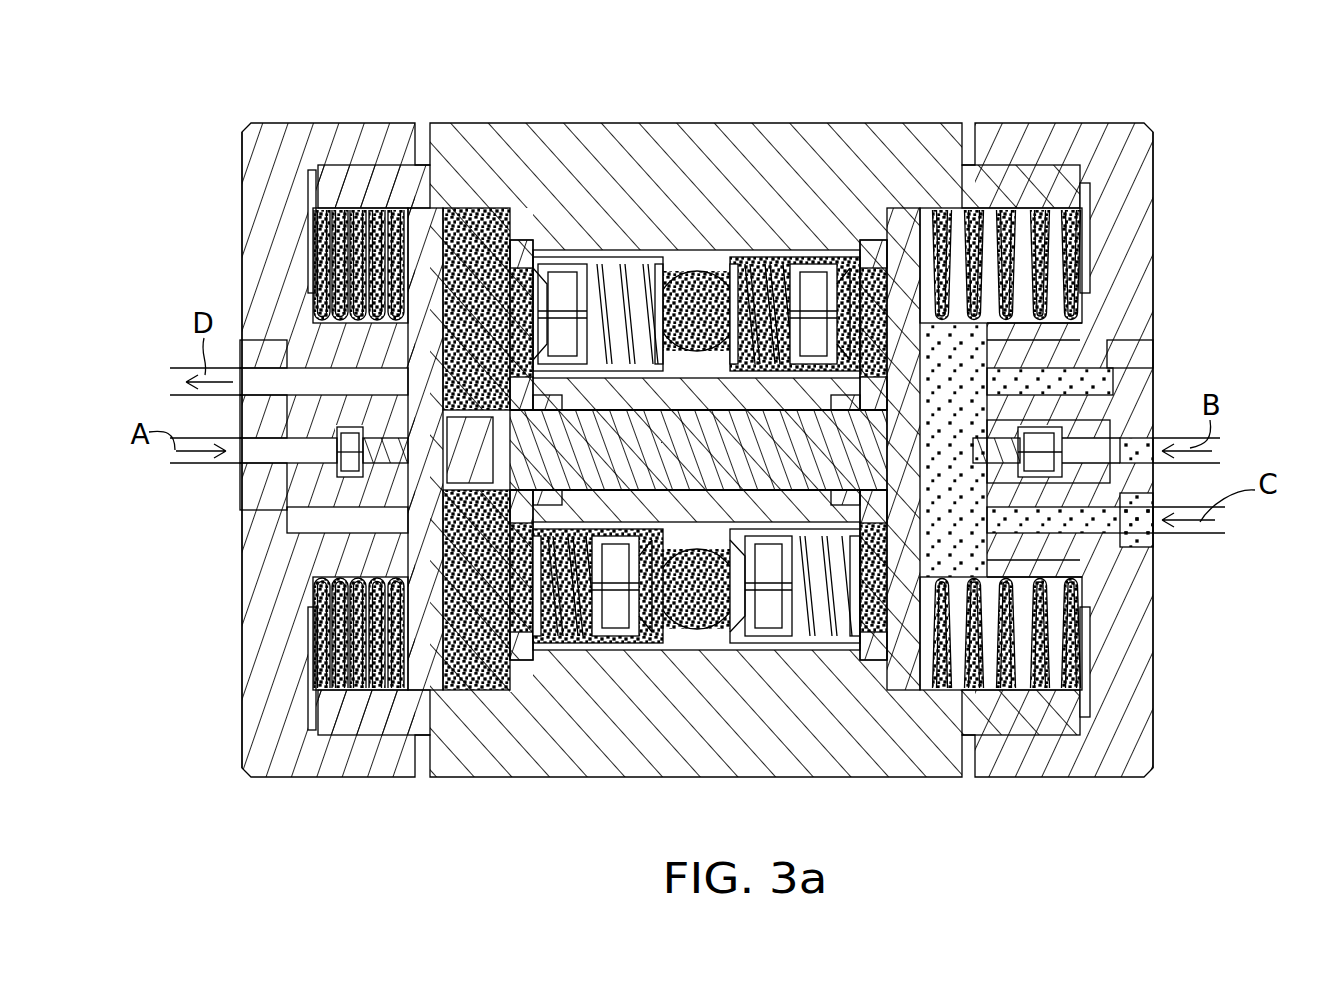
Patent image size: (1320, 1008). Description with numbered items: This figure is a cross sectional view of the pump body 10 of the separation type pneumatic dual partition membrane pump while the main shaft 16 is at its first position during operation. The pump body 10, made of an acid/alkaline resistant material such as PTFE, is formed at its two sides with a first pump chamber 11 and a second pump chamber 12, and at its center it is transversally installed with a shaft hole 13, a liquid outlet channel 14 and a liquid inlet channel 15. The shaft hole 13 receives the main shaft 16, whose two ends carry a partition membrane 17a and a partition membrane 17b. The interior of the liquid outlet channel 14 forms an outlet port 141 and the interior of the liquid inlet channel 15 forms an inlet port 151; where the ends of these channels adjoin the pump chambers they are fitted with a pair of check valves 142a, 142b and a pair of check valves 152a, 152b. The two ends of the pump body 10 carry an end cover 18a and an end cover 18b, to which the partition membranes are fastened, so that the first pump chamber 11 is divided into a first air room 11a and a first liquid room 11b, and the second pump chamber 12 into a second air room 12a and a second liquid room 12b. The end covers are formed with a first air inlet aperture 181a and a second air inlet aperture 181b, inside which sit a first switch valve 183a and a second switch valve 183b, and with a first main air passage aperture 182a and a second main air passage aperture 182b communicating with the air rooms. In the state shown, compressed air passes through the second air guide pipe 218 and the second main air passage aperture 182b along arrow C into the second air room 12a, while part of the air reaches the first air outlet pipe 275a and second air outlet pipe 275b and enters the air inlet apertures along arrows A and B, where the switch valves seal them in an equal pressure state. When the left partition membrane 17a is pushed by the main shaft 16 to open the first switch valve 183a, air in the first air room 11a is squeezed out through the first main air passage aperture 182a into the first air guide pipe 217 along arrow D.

The pump body 10 is at (862, 768).
The first pump chamber 11 is at (445, 210).
The first air room 11a is at (392, 692).
The first liquid room 11b is at (470, 692).
The second pump chamber 12 is at (957, 208).
The second air room 12a is at (957, 362).
The second liquid room 12b is at (942, 692).
The shaft hole 13 is at (650, 300).
The liquid outlet channel 14 is at (768, 262).
The outlet port 141 is at (700, 275).
The check valve 142a is at (562, 262).
The check valve 142b is at (838, 258).
The liquid inlet channel 15 is at (640, 652).
The inlet port 151 is at (697, 632).
The check valve 152a is at (600, 652).
The check valve 152b is at (770, 652).
The main shaft 16 is at (625, 428).
The partition membrane 17a is at (441, 124).
The partition membrane 17b is at (903, 223).
The end cover 18a is at (258, 172).
The end cover 18b is at (1140, 180).
The first air inlet aperture 181a is at (238, 465).
The second air inlet aperture 181b is at (1150, 440).
The first main air passage aperture 182a is at (242, 357).
The second main air passage aperture 182b is at (1140, 540).
The first switch valve 183a is at (340, 437).
The second switch valve 183b is at (1040, 430).
The first air guide pipe 217 is at (178, 372).
The second air guide pipe 218 is at (1213, 533).
The first air outlet pipe 275a is at (207, 455).
The second air outlet pipe 275b is at (1185, 457).